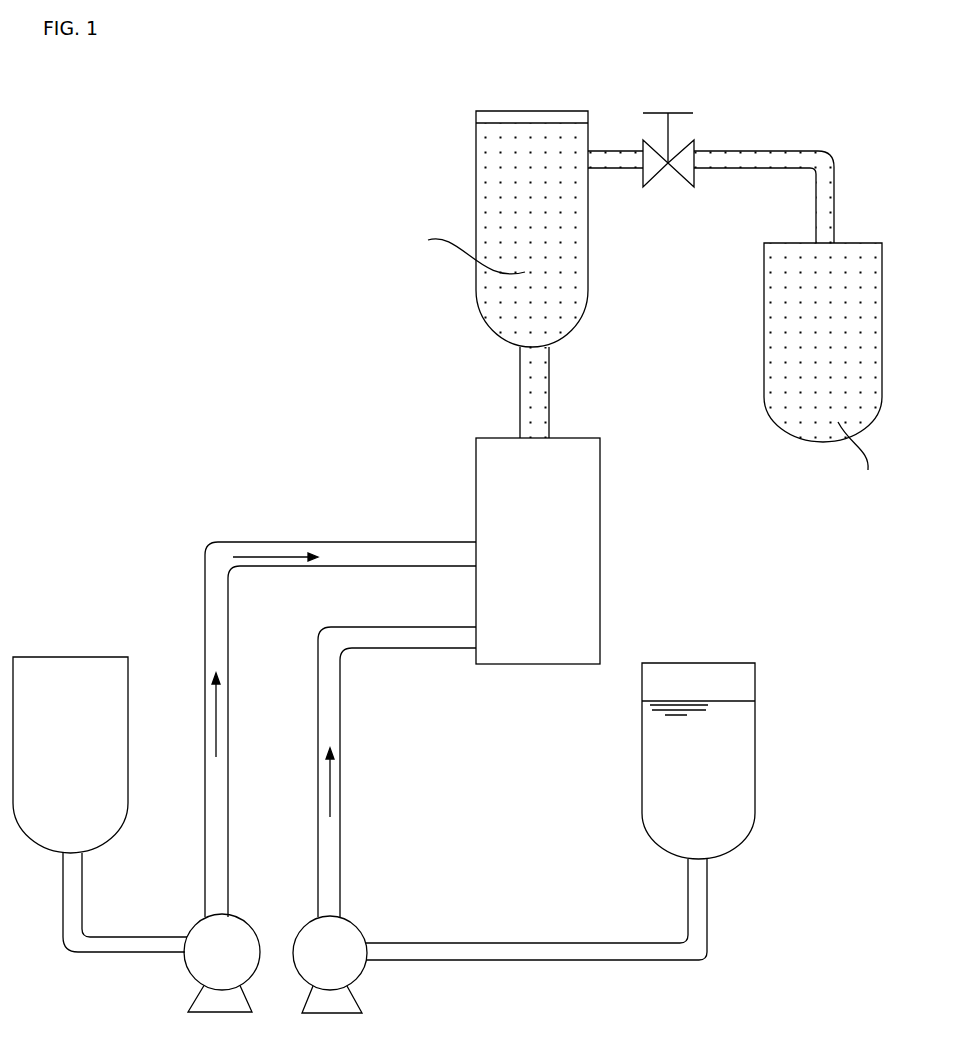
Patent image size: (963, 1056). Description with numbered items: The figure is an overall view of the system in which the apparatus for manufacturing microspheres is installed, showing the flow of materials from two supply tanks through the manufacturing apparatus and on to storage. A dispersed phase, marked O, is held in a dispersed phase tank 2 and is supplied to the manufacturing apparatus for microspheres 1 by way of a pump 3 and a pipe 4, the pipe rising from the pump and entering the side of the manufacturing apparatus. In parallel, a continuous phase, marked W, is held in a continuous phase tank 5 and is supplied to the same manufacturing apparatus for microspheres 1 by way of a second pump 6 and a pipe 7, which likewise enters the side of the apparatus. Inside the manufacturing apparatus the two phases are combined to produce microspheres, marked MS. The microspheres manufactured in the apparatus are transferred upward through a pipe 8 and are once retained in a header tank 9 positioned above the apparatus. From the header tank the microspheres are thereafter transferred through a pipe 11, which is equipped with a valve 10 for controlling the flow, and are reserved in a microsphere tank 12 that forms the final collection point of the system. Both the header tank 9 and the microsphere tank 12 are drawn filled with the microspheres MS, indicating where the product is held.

The manufacturing apparatus for microspheres 1 is at (575, 555).
The dispersed phase tank 2 is at (82, 662).
The pump 3 is at (205, 970).
The pipe 4 is at (283, 540).
The continuous phase tank 5 is at (755, 727).
The pump 6 is at (343, 970).
The pipe 7 is at (335, 715).
The pipe 8 is at (527, 376).
The header tank 9 is at (500, 150).
The valve 10 is at (668, 110).
The pipe 11 is at (760, 150).
The microsphere tank 12 is at (803, 362).